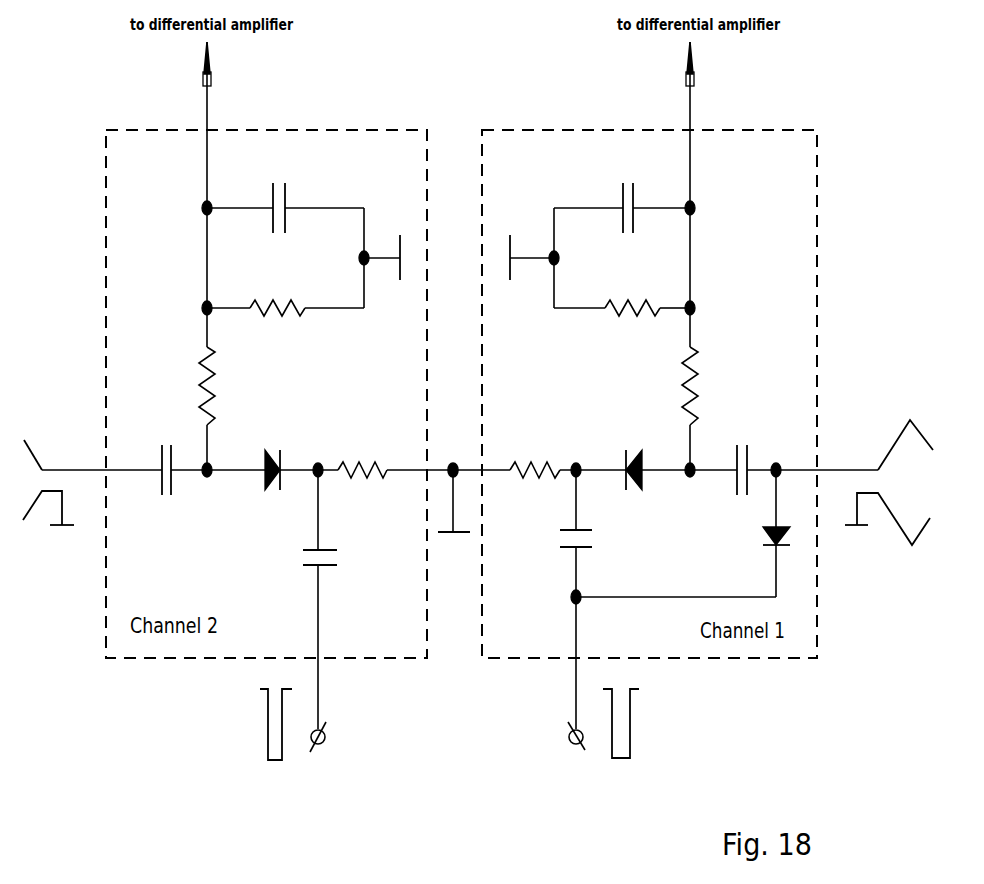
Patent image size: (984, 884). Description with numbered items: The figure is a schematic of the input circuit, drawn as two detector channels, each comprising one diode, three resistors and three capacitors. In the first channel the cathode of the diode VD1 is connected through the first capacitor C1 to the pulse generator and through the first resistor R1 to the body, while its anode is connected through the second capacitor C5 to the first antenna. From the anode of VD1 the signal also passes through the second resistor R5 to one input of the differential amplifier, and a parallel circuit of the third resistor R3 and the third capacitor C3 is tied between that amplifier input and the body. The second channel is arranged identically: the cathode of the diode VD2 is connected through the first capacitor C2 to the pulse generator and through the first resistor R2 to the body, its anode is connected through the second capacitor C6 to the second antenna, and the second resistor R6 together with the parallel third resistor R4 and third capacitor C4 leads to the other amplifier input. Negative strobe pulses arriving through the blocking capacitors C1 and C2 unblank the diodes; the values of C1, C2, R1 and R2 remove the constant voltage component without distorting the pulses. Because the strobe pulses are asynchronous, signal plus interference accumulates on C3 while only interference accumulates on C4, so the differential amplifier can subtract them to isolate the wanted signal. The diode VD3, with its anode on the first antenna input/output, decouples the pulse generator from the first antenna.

The third capacitor C4 is at (301, 230).
The third resistor R4 is at (283, 290).
The second resistor R6 is at (221, 386).
The second capacitor C6 is at (183, 453).
The diode VD2 is at (273, 451).
The first resistor R2 is at (350, 454).
The first capacitor C2 is at (336, 611).
The third capacitor C3 is at (602, 230).
The third resistor R3 is at (624, 290).
The second resistor R5 is at (704, 386).
The first resistor R1 is at (545, 454).
The diode VD1 is at (657, 452).
The second capacitor C5 is at (755, 454).
The first capacitor C1 is at (593, 610).
The diode VD3 is at (683, 533).